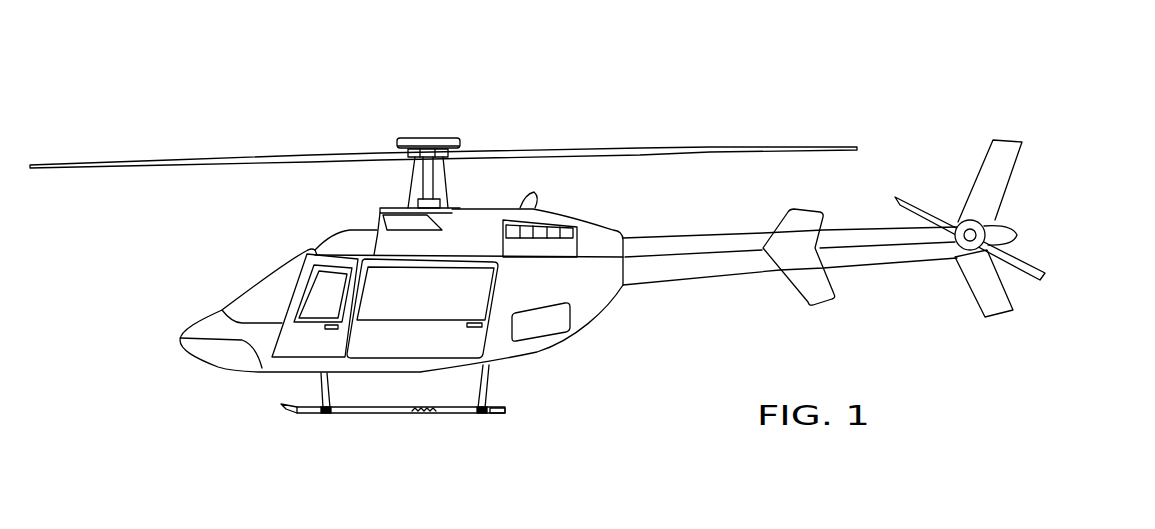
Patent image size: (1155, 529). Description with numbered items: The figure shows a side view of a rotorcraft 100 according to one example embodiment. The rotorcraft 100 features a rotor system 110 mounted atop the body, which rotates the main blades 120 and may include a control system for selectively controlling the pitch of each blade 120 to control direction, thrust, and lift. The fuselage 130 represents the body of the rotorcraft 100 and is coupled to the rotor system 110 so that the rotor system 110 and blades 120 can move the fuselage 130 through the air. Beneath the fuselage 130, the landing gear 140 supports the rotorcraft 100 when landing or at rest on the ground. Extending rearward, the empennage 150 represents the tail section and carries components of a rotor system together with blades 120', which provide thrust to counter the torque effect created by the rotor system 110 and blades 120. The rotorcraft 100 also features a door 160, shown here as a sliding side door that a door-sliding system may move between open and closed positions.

The rotorcraft 100 is at (275, 95).
The rotor system 110 is at (428, 137).
The blades 120 is at (443, 129).
The blades 120' is at (1011, 228).
The fuselage 130 is at (223, 368).
The landing gear 140 is at (372, 417).
The empennage 150 is at (702, 280).
The door 160 is at (500, 275).